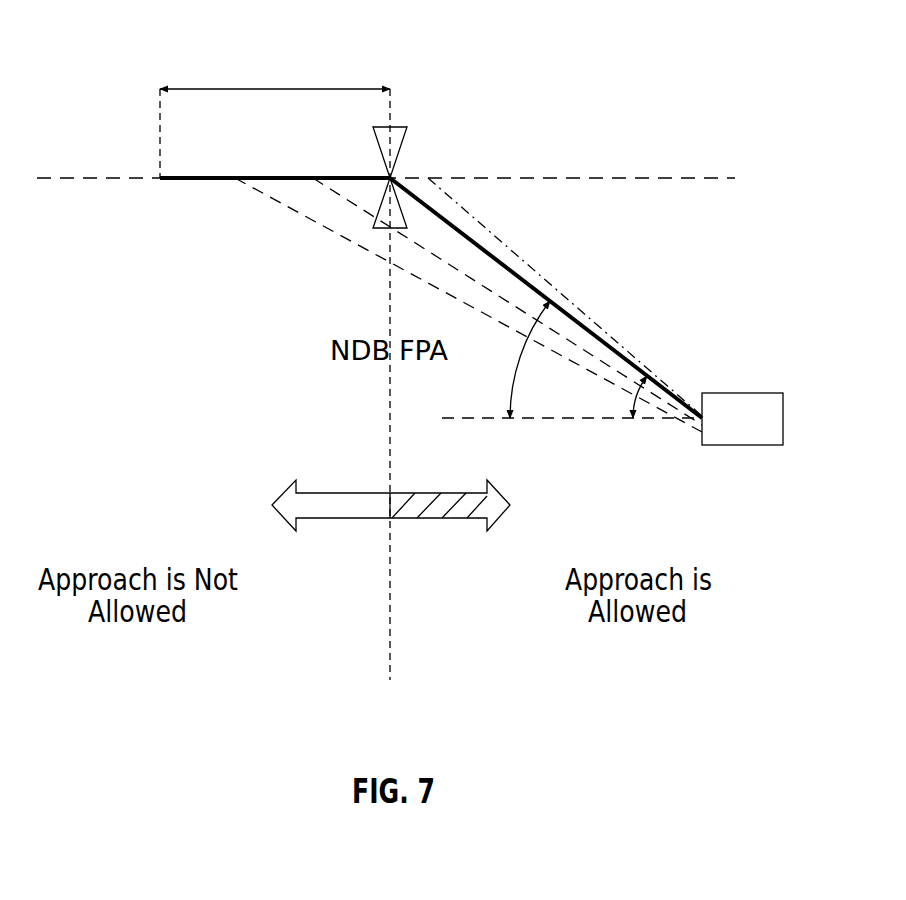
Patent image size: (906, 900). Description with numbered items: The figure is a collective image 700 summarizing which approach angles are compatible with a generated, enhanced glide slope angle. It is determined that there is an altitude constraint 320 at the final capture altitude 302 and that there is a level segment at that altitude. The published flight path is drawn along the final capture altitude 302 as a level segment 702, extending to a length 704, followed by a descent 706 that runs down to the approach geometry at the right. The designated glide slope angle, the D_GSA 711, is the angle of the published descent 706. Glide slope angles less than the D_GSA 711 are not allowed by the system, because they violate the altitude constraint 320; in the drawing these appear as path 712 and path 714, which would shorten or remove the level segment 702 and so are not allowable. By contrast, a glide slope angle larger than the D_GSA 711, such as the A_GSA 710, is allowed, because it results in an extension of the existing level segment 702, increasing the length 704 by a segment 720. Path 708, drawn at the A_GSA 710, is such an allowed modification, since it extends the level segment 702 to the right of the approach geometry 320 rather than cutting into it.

The collective image 700 is at (159, 56).
The final capture altitude 302 is at (112, 180).
The level segment 702 is at (210, 181).
The length of level segment 704 is at (277, 88).
The altitude constraint 320 is at (398, 125).
The segment 720 is at (408, 177).
The descent 706 is at (540, 283).
The path 708 is at (483, 223).
The A_GSA 710 is at (520, 355).
The D_GSA 711 is at (630, 398).
The path 712 is at (433, 260).
The path 714 is at (348, 243).